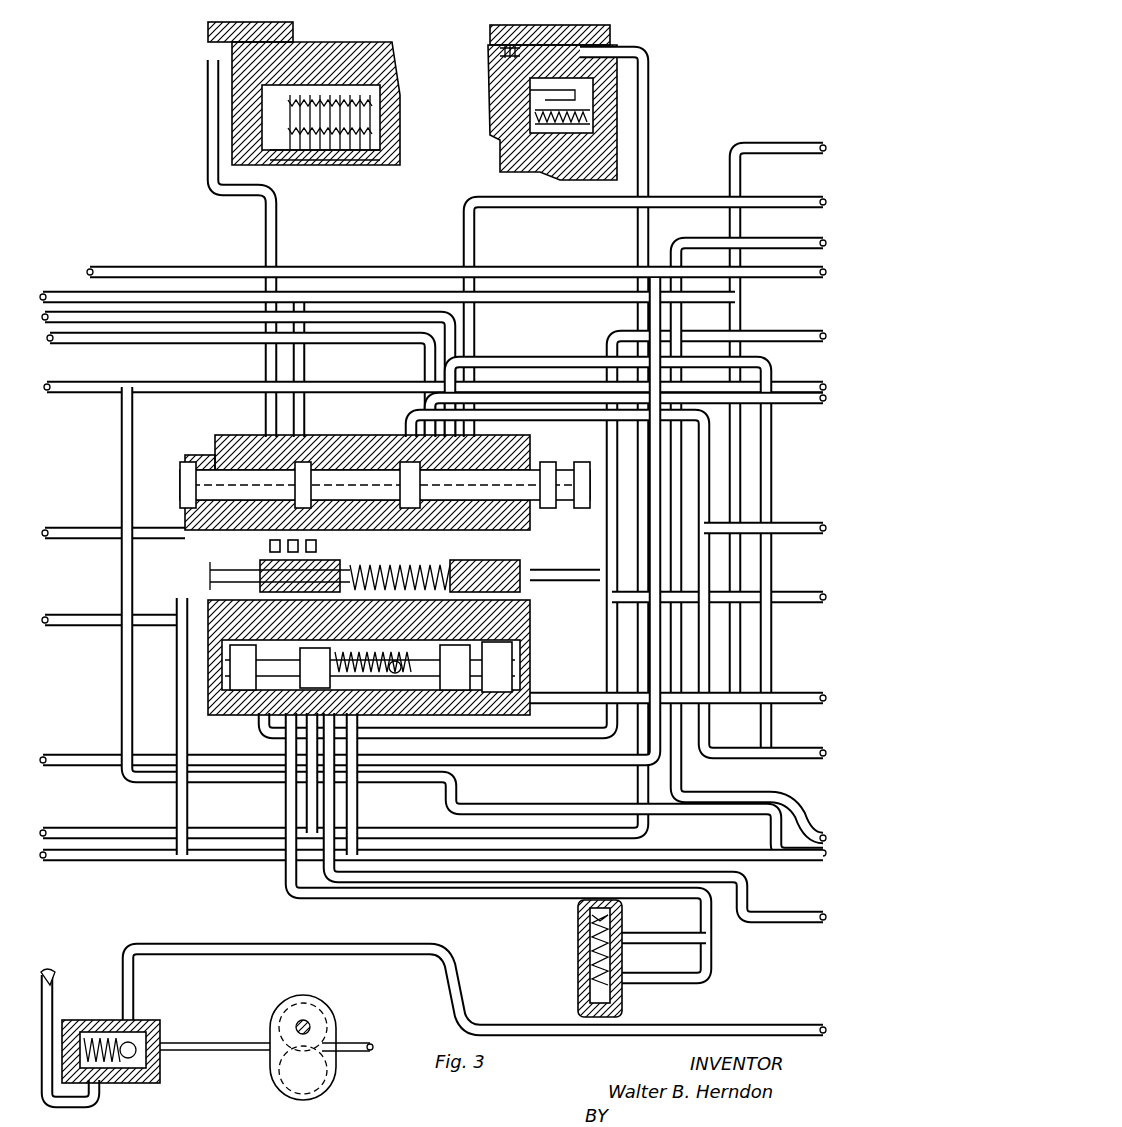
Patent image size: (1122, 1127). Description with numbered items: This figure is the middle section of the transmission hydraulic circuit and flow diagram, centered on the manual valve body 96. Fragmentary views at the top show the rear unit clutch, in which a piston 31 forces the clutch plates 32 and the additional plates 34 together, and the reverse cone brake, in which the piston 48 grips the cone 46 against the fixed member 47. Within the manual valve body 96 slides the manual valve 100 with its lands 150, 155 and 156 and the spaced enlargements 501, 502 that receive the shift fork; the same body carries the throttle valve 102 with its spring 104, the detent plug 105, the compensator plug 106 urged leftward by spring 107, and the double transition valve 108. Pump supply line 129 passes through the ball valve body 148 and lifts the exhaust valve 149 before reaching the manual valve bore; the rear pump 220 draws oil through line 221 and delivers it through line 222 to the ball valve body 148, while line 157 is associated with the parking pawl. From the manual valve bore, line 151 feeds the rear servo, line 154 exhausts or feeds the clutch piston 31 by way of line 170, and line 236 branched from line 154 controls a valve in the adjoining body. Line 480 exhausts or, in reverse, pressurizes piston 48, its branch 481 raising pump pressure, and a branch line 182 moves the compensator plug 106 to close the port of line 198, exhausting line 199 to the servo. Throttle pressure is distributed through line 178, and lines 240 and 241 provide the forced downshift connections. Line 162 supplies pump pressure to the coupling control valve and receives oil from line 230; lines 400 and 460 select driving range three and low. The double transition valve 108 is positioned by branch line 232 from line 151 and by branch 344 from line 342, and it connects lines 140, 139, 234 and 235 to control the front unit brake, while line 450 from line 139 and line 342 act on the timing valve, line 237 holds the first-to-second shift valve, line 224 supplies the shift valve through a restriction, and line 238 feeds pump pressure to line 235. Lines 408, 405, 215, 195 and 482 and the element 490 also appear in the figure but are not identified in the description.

The piston 31 is at (232, 92).
The clutch plates 32 is at (380, 112).
The additional plates 34 is at (348, 152).
The line 154 is at (210, 148).
The cone 46 is at (575, 27).
The fixed member 47 is at (538, 26).
The piston 48 is at (598, 75).
The line 480 is at (648, 104).
The line 481 is at (641, 624).
The line 151 is at (758, 150).
The line 460 is at (818, 202).
The line 199 is at (818, 243).
The line 170 is at (350, 270).
The line 236 is at (132, 270).
The conduit 408 is at (55, 294).
The conduit 405 is at (92, 322).
The oil line 162 is at (162, 342).
The line 139 is at (118, 392).
The line 450 is at (798, 384).
The line 342 is at (785, 334).
The branch line 232 is at (760, 334).
The line 230 is at (815, 410).
The line 400 is at (772, 662).
The line 241 is at (788, 526).
The line 224 is at (790, 752).
The branch line 237 is at (790, 696).
The line 178 is at (60, 532).
The line 234 is at (58, 619).
The conduit 215 is at (60, 758).
The line 235 is at (770, 800).
The conduit 195 is at (115, 858).
The line 238 is at (478, 878).
The line 198 is at (524, 894).
The line 182 is at (188, 832).
The conduit 482 is at (312, 805).
The line 140 is at (776, 917).
The manual valve body 96 is at (242, 434).
The manual valve 100 is at (352, 440).
The land 150 is at (385, 485).
The land 155 is at (245, 485).
The line 240 is at (400, 485).
The line 129 is at (728, 960).
The valve land 490 is at (547, 485).
The enlargement 501 is at (549, 508).
The second enlargement 502 is at (582, 508).
The land 156 is at (180, 482).
The spring 107 is at (277, 602).
The spring 104 is at (452, 578).
The compensator plug 106 is at (222, 714).
The detent plug 105 is at (210, 582).
The throttle valve 102 is at (546, 586).
The double transition valve 108 is at (530, 680).
The branch line 344 is at (576, 705).
The ball valve body 148 is at (100, 1024).
The line 222 is at (215, 1042).
The rear pump 220 is at (316, 1000).
The line 221 is at (350, 1044).
The line 157 is at (772, 1030).
The valve 149 is at (578, 948).